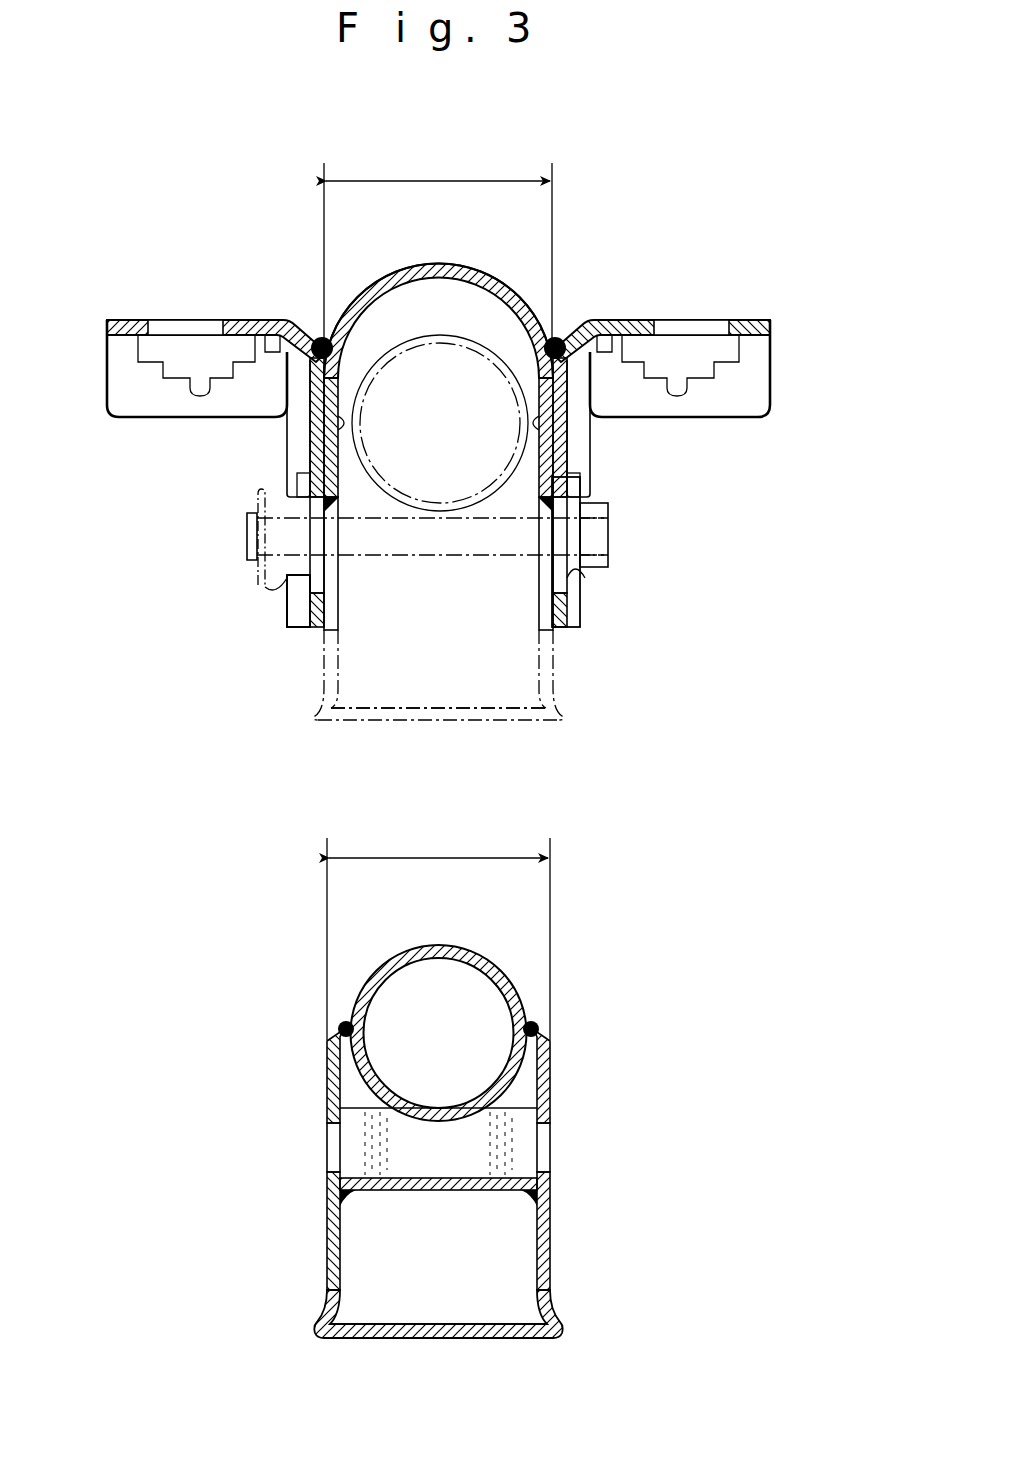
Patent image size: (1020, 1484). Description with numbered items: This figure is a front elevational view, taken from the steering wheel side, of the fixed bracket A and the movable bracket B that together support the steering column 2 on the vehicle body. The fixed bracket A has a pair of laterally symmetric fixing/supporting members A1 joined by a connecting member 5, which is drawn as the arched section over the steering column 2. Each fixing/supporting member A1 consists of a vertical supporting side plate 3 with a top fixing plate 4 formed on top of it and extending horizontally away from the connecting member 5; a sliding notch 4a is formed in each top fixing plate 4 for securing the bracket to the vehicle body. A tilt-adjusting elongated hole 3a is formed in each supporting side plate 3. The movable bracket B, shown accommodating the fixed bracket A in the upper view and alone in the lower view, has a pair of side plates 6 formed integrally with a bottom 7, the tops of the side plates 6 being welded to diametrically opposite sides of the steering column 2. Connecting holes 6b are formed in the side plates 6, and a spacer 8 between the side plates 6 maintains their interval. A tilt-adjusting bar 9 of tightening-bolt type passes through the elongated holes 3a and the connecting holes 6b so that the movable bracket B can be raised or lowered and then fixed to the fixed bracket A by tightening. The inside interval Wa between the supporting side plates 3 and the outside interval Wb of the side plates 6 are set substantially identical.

The steering column 2 is at (456, 344).
The supporting side plate 3 is at (306, 462).
The tilt-adjusting elongated hole 3a is at (613, 596).
The top fixing plate 4 is at (254, 324).
The sliding notch 4a is at (200, 330).
The connecting member 5 is at (492, 268).
The side plate 6 is at (531, 630).
The connecting hole 6b is at (328, 1158).
The bottom 7 is at (372, 710).
The spacer 8 is at (468, 1192).
The tilt-adjusting bar 9 is at (385, 560).
The fixed bracket A is at (410, 266).
The fixing/supporting member A1 is at (668, 230).
The movable bracket B is at (564, 681).
The inside interval Wa is at (438, 245).
The outside interval Wb is at (438, 932).